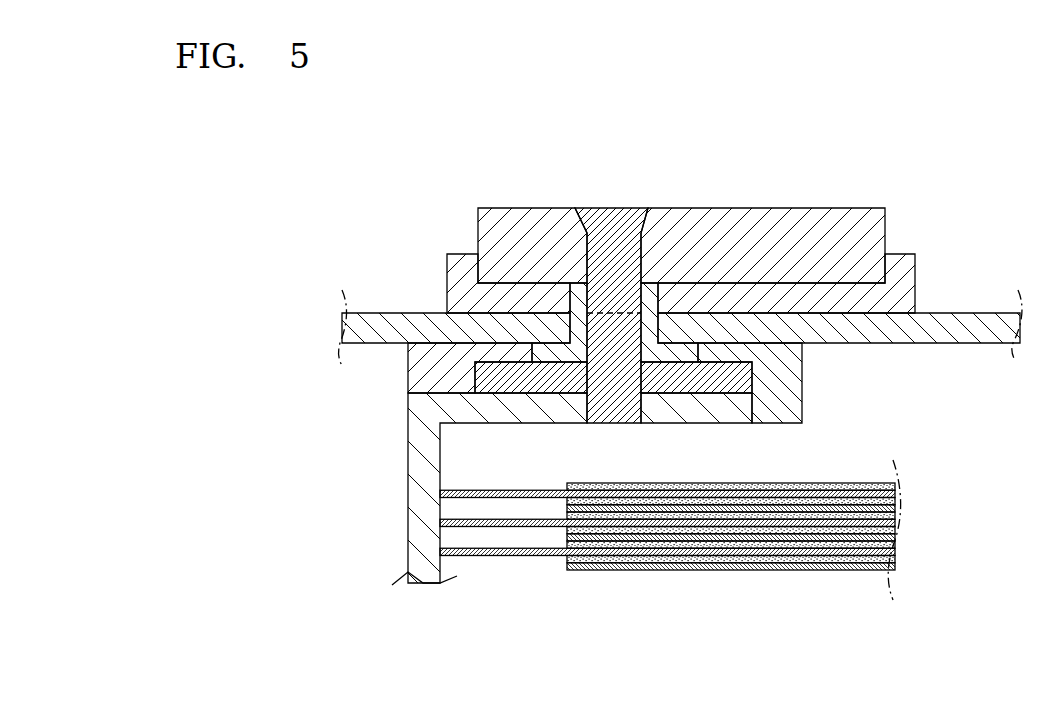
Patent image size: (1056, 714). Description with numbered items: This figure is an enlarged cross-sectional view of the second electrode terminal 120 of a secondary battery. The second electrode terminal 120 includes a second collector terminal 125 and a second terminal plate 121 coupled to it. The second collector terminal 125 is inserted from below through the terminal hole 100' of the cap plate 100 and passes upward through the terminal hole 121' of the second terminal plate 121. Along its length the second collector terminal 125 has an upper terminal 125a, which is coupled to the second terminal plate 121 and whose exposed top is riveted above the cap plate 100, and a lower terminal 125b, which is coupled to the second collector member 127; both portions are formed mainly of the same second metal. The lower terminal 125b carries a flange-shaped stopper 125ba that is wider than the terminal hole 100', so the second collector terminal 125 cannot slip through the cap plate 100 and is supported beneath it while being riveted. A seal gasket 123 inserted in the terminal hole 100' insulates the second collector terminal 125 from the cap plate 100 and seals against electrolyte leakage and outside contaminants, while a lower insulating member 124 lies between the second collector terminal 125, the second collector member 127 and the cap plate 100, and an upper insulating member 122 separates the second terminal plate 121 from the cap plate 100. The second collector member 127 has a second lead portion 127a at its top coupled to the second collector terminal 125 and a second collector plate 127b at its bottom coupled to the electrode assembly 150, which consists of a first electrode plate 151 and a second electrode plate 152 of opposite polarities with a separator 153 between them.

The cap plate 100 is at (680, 305).
The terminal hole 100' is at (545, 230).
The second electrode terminal 120 is at (610, 337).
The second terminal plate 121 is at (681, 207).
The terminal hole of second terminal plate 121' is at (611, 279).
The upper insulating member 122 is at (903, 267).
The seal gasket 123 is at (556, 353).
The lower insulating member 124 is at (430, 357).
The second collector terminal 125 is at (741, 370).
The upper terminal 125a is at (623, 265).
The lower terminal 125b is at (625, 333).
The stopper 125ba is at (710, 385).
The second collector member 127 is at (511, 489).
The second lead portion 127a is at (478, 414).
The second collector plate 127b is at (393, 540).
The electrode assembly 150 is at (670, 563).
The first electrode plate 151 is at (728, 571).
The second electrode plate 152 is at (476, 556).
The separator 153 is at (613, 558).